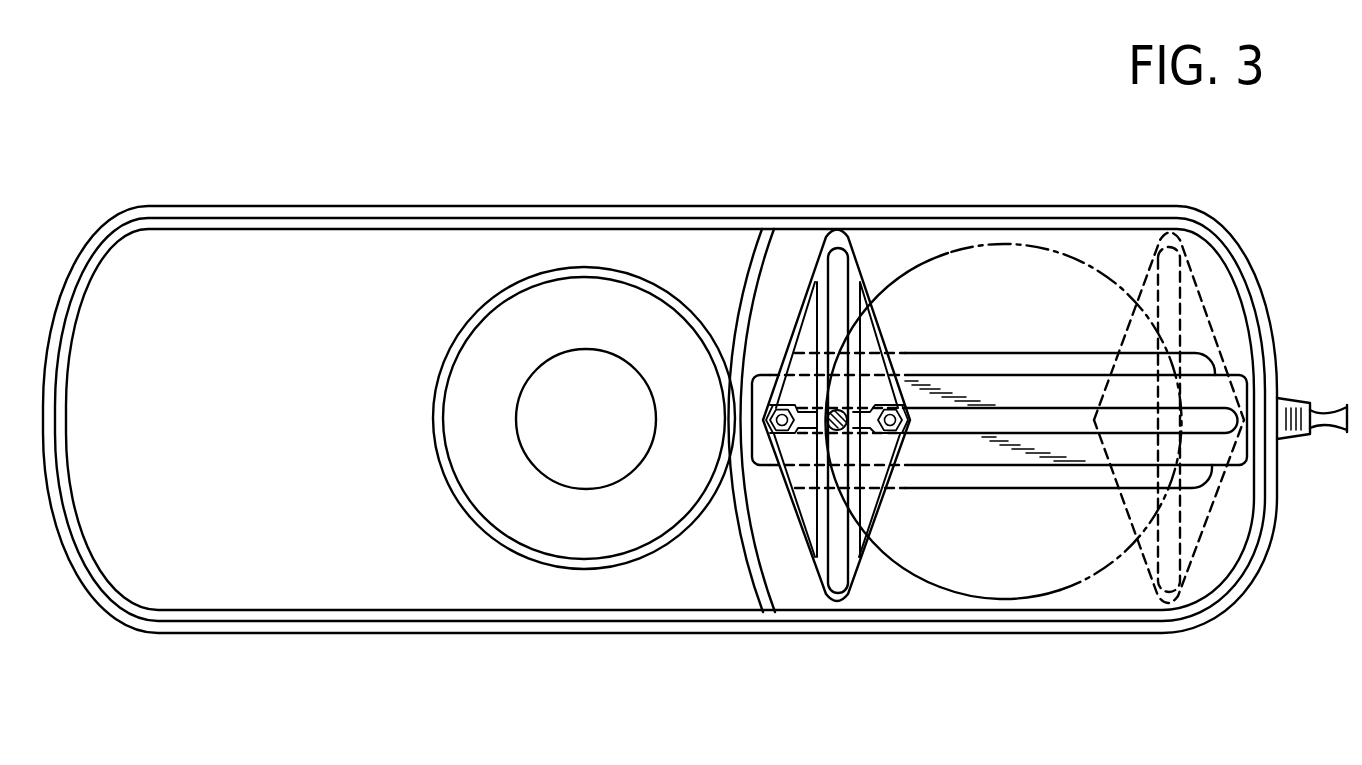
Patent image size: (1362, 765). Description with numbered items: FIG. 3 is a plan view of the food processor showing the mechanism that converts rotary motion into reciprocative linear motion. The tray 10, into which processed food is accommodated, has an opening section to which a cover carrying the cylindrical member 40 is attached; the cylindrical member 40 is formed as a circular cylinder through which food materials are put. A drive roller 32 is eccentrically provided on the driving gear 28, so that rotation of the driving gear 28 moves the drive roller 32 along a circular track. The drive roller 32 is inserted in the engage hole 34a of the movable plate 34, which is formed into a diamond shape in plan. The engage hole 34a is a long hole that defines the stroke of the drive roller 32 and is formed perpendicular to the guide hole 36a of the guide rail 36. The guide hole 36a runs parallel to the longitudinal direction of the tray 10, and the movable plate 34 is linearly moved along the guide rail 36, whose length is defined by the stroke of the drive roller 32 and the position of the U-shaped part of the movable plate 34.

The tray 10 is at (437, 627).
The driving gear 28 is at (1016, 246).
The drive roller 32 is at (823, 588).
The movable plate 34 is at (812, 253).
The engage hole 34a is at (845, 248).
The guide rail 36 is at (1053, 445).
The guide hole 36a is at (975, 423).
The cylindrical member 40 is at (592, 567).